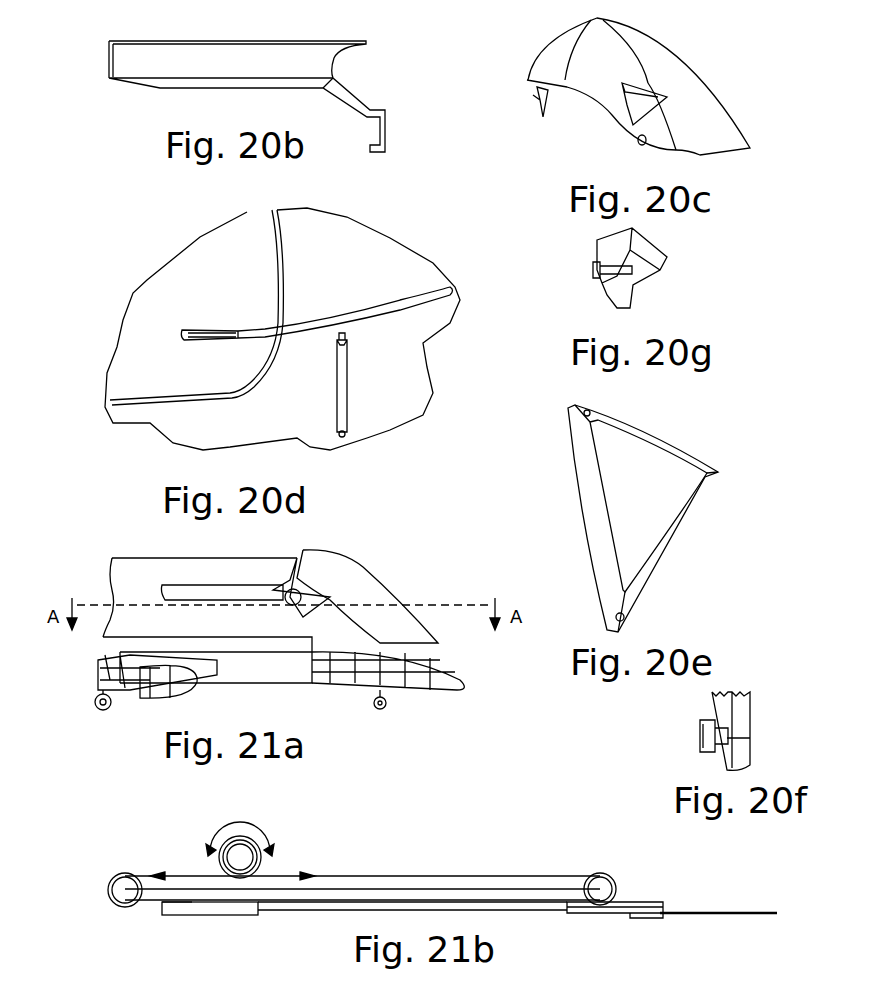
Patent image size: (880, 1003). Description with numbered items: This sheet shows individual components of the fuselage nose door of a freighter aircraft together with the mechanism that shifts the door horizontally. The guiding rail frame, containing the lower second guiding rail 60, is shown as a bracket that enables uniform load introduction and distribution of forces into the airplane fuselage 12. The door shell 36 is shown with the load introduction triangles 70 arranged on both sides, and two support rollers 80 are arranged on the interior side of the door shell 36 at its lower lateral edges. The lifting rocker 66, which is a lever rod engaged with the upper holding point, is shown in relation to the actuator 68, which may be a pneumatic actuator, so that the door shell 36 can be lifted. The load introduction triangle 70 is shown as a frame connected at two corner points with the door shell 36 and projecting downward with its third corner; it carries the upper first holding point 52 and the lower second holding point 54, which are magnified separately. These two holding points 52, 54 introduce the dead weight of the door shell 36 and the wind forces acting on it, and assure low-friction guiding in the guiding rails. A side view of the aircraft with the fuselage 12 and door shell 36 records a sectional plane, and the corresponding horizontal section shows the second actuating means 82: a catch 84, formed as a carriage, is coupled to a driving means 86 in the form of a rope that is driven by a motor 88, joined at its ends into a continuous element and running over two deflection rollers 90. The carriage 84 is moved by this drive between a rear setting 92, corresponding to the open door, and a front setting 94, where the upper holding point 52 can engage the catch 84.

In FIG. 20D, the fuselage area 12 is at (380, 260).
In FIG. 21A, the fuselage area 12 is at (267, 568).
In FIG. 20C, the door shell 36 is at (678, 62).
In FIG. 20D, the door shell 36 is at (177, 292).
In FIG. 21A, the door shell 36 is at (373, 582).
In FIG. 21B, the door shell 36 is at (717, 913).
In FIG. 20G, the first holding point 52 is at (610, 275).
In FIG. 20E, the first holding point 52 is at (597, 405).
In FIG. 20E, the second holding point 54 is at (625, 620).
In FIG. 20F, the second holding point 54 is at (700, 742).
In FIG. 20B, the second guiding rail 60 is at (124, 62).
In FIG. 20D, the lifting rocker 66 is at (313, 330).
In FIG. 20D, the actuator 68 is at (343, 380).
In FIG. 20C, the load introduction triangle 70 is at (538, 97).
In FIG. 20G, the load introduction triangle 70 is at (637, 298).
In FIG. 20E, the load introduction triangle 70 is at (683, 523).
In FIG. 20F, the load introduction triangle 70 is at (742, 722).
In FIG. 20C, the support rollers 80 is at (645, 138).
In FIG. 21B, the second actuating means 82 is at (360, 872).
In FIG. 21B, the catch 84 is at (240, 910).
In FIG. 21B, the driving means 86 is at (308, 908).
In FIG. 21B, the motor 88 is at (240, 852).
In FIG. 21B, the deflection rollers 90 is at (120, 890).
In FIG. 21B, the rear setting 92 is at (190, 918).
In FIG. 21B, the front setting 94 is at (600, 915).